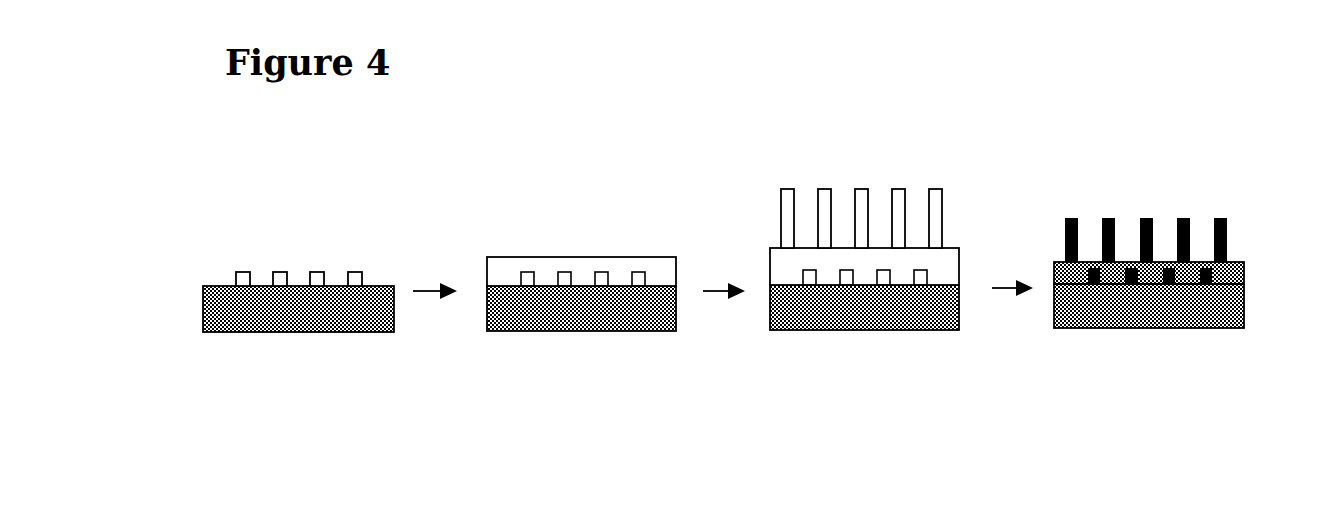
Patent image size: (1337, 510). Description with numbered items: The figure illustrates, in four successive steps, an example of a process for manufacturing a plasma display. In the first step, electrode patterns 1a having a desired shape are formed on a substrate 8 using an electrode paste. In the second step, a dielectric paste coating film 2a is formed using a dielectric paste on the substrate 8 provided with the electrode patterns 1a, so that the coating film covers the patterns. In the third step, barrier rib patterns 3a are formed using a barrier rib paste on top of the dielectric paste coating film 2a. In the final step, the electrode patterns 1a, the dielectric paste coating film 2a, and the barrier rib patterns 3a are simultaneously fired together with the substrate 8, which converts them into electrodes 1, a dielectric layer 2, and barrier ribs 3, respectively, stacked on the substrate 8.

The substrate 8 is at (283, 313).
The electrode patterns 1a is at (241, 270).
The dielectric paste coating film 2a is at (507, 270).
The barrier rib patterns 3a is at (782, 195).
The electrodes 1 is at (1203, 282).
The dielectric layer 2 is at (1232, 268).
The barrier ribs 3 is at (1225, 218).